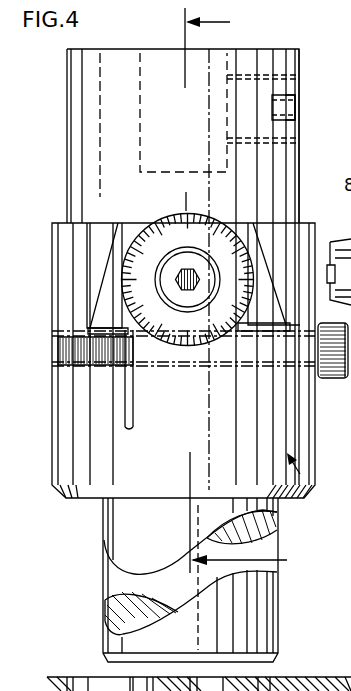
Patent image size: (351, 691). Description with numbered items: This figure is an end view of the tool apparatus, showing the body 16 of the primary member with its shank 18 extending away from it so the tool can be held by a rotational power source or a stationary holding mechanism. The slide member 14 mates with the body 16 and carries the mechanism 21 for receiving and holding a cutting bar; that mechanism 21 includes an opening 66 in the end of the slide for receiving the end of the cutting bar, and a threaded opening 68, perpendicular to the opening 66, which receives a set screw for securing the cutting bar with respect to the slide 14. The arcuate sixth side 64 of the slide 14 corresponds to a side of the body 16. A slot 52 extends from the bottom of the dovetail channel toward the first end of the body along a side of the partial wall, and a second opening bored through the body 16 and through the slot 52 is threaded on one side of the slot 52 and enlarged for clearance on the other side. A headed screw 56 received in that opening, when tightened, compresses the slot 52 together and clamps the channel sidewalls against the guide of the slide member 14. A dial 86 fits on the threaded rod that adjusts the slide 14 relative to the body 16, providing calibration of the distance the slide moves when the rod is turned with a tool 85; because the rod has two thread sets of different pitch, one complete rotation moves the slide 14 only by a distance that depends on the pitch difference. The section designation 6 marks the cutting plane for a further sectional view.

The slide member 14 is at (94, 315).
The body 16 is at (306, 487).
The shank 18 is at (104, 529).
The mechanism for holding a cutting bar 21 is at (286, 46).
The slot 52 is at (129, 406).
The headed screw 56 is at (331, 374).
The sixth side 64 is at (318, 79).
The opening 66 is at (87, 685).
The threaded opening 68 is at (150, 64).
The tool 85 is at (329, 243).
The dial 86 is at (151, 232).
The section line 6- 6 is at (246, 291).